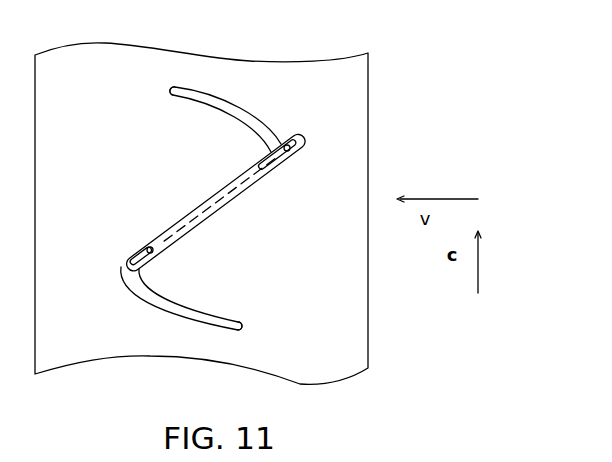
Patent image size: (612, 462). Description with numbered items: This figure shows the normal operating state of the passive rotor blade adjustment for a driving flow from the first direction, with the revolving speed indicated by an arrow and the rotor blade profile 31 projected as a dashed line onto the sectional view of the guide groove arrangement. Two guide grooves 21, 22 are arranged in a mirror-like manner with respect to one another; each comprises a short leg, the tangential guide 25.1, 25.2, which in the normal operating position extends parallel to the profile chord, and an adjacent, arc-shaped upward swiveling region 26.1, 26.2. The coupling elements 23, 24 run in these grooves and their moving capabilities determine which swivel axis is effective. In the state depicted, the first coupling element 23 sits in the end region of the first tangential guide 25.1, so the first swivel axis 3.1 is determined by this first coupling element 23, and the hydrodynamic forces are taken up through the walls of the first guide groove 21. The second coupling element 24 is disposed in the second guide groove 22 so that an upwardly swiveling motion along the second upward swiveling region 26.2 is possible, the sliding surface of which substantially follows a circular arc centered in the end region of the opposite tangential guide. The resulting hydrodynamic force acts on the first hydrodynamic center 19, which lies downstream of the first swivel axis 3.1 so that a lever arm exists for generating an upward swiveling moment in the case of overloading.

The first swivel axis 3.1 is at (151, 242).
The first hydrodynamic center 19 is at (182, 219).
The first guide groove 21 is at (132, 291).
The second guide groove 22 is at (253, 113).
The first coupling element 23 is at (147, 248).
The second coupling element 24 is at (300, 152).
The first tangential guide 25.1 is at (132, 265).
The second tangential guide 25.2 is at (286, 155).
The first upward swiveling region 26.1 is at (170, 313).
The second upward swiveling region 26.2 is at (213, 94).
The profile 31 is at (215, 213).